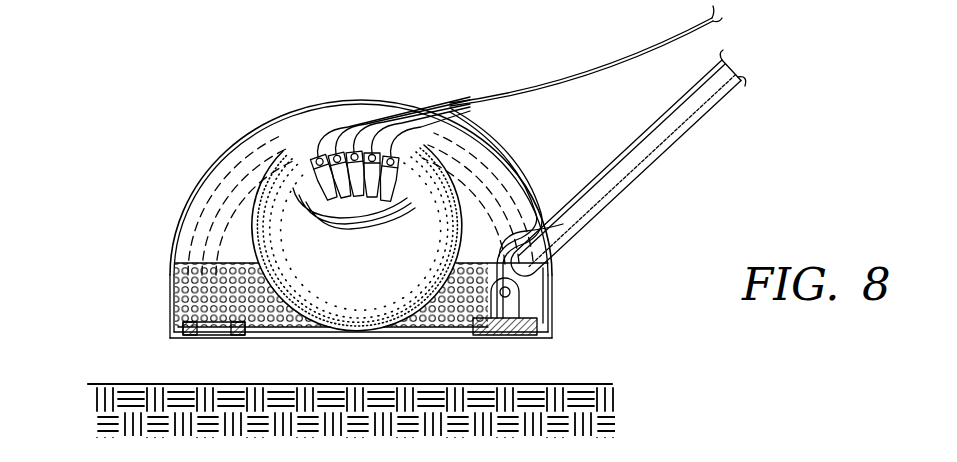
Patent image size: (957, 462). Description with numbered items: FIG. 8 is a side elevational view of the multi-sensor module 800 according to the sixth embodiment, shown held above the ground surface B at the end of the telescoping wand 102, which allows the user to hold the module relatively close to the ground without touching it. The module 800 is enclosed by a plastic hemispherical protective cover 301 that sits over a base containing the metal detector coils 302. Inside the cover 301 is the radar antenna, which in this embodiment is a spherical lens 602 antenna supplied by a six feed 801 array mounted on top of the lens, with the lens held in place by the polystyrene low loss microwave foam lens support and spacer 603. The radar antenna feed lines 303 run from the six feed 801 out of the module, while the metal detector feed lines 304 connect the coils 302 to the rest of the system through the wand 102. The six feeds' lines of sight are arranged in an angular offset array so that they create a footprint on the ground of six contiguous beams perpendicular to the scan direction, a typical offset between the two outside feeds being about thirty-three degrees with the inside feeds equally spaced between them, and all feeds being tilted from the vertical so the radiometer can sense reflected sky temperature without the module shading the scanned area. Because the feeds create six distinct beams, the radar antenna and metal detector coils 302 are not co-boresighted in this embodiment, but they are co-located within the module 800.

The multi-sensor module 800 is at (206, 100).
The six feed 801 is at (295, 212).
The plastic hemispherical protective cover 301 is at (190, 204).
The metal detector coils 302 is at (218, 337).
The radar antenna feed lines 303 is at (543, 82).
The metal detector feed lines 304 is at (517, 208).
The telescoping wand 102 is at (633, 181).
The spherical lens 602 is at (386, 292).
The foam lens support and spacer 603 is at (520, 305).
The surface B is at (604, 381).